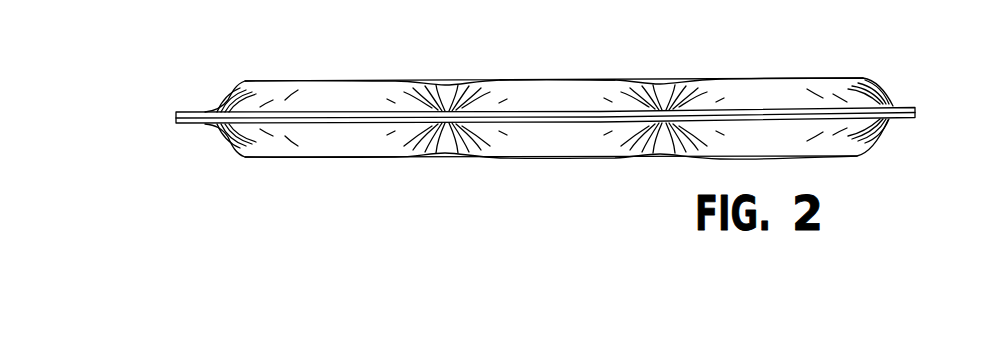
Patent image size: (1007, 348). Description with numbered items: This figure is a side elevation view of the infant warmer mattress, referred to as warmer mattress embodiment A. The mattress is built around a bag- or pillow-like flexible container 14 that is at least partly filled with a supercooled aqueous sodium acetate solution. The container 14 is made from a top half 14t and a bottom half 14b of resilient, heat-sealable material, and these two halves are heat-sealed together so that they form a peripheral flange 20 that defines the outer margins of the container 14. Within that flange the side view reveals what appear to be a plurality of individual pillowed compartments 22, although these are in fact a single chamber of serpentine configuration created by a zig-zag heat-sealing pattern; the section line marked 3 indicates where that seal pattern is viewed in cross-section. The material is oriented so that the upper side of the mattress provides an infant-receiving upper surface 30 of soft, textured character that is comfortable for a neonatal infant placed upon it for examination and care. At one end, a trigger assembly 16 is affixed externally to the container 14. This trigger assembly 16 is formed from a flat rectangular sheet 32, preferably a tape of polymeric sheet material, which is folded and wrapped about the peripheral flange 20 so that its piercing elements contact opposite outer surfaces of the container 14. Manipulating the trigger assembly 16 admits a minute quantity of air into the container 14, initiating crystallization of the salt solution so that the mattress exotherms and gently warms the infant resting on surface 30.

The flexible container 14 is at (732, 68).
The top half of container 14t is at (298, 81).
The bottom half of container 14b is at (352, 158).
The peripheral flange 20 is at (898, 107).
The pillowed compartments 22 is at (378, 86).
The infant-receiving upper surface 30 is at (570, 81).
The flat rectangular sheet 32 is at (216, 112).
The trigger assembly 16 is at (215, 127).
The section line 3- 3 is at (133, 160).
The warmer mattress embodiment A is at (177, 210).